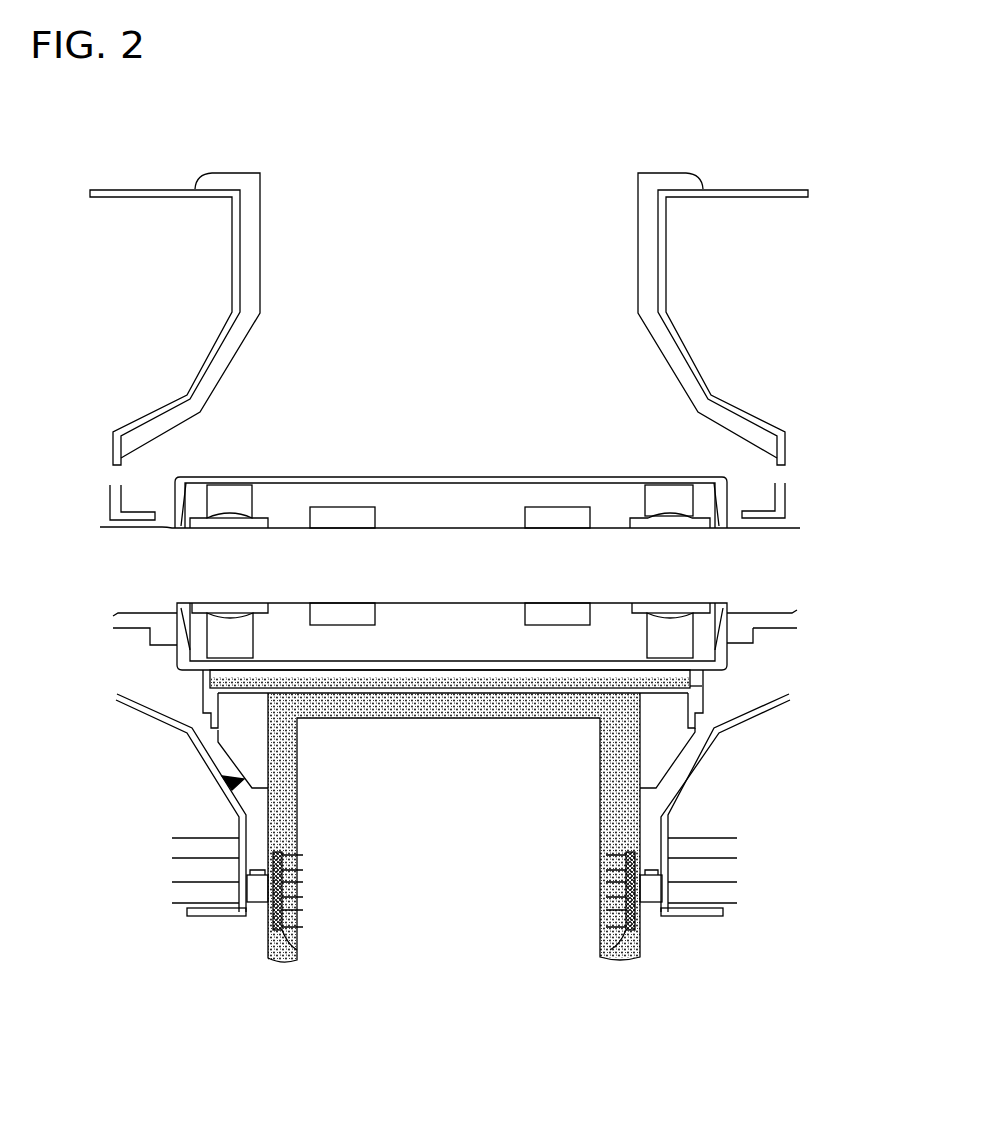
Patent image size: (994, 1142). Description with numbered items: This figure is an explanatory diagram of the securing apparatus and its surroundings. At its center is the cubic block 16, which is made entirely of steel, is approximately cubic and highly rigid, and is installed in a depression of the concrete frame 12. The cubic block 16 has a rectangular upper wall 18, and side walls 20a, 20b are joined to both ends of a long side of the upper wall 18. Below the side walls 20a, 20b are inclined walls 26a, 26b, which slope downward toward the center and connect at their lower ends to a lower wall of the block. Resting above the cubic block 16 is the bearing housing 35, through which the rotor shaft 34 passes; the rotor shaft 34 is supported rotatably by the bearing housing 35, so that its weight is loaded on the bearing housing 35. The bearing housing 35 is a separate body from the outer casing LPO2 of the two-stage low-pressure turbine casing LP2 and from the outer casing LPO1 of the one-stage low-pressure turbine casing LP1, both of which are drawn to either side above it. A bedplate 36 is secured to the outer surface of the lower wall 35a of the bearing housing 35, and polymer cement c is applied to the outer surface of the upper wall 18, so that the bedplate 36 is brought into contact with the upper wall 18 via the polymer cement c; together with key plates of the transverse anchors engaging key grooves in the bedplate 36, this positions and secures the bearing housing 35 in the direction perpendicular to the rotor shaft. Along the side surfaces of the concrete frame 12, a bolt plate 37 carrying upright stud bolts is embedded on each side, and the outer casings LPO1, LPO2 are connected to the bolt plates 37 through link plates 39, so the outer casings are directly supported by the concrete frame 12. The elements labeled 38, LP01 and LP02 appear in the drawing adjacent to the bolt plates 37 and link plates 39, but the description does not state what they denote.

The two-stage low-pressure turbine casing LP2 is at (128, 193).
The one-stage low-pressure turbine casing LP1 is at (756, 193).
The outer casing LPO2 is at (262, 243).
The outer casing LPO1 is at (637, 214).
The bearing housing 35 is at (467, 478).
The rotor shaft 34 is at (418, 528).
The lower wall 35a is at (408, 663).
The bedplate 36 is at (683, 677).
The polymer cement c is at (702, 685).
The side wall 20a is at (208, 685).
The side wall 20b is at (706, 698).
The concrete frame 12 is at (648, 957).
The upper wall 18 is at (660, 693).
The cubic block 16 is at (232, 786).
The inclined wall 26a is at (217, 745).
The inclined wall 26b is at (678, 757).
The second lower plate LP02 is at (205, 918).
The first lower plate LP01 is at (713, 917).
The fastening portion 38 is at (290, 927).
The link plate 39 is at (258, 903).
The bolt plate 37 is at (290, 942).